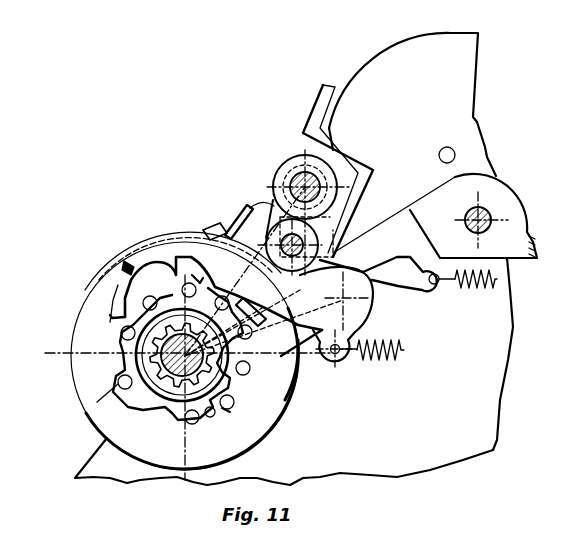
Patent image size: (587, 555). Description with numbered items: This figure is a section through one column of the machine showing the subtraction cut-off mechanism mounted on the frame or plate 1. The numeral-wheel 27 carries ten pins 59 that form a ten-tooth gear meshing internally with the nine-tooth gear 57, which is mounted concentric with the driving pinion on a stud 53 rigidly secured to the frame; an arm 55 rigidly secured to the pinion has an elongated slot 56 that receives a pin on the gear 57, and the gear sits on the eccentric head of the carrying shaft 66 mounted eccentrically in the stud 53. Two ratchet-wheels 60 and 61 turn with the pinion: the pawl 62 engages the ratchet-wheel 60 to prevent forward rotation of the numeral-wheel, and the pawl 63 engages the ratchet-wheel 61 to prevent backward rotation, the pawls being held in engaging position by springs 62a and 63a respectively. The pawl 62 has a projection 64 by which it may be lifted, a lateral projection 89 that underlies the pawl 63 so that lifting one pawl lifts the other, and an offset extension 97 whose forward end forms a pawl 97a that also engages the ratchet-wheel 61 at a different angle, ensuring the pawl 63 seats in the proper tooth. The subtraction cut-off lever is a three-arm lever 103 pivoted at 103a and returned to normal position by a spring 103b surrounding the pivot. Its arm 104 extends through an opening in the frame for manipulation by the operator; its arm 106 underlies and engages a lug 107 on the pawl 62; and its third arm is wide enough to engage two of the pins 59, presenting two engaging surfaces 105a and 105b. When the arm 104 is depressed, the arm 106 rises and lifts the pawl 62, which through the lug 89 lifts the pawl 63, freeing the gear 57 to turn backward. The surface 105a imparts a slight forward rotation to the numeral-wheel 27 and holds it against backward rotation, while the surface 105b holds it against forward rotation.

The frame or plate 1 is at (425, 86).
The arm 104 is at (318, 105).
The spring 103b is at (274, 208).
The three-arm lever 103 is at (338, 232).
The pivot 103a is at (368, 273).
The spring 62a is at (497, 279).
The lateral projection 89 is at (266, 307).
The projection 64 is at (352, 337).
The spring 63a is at (405, 352).
The numeral-wheel 27 is at (284, 402).
The engaging surface 105b is at (294, 387).
The engaging surface 105a is at (238, 296).
The stud 53 is at (163, 398).
The arm 55 is at (115, 398).
The elongated slot 56 is at (117, 384).
The gear 57 is at (248, 366).
The carrying shaft 66 is at (234, 393).
The ratchet-wheel 60 is at (199, 414).
The ratchet-wheel 61 is at (213, 414).
The pins 59 is at (227, 411).
The pawl 62 is at (167, 258).
The offset extension 97 is at (120, 285).
The pawl 97a is at (113, 310).
The pawl 63 is at (203, 277).
The arm 106 is at (250, 243).
The lug 107 is at (213, 228).